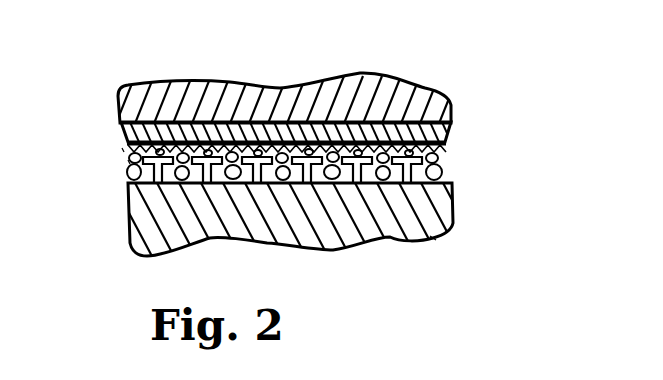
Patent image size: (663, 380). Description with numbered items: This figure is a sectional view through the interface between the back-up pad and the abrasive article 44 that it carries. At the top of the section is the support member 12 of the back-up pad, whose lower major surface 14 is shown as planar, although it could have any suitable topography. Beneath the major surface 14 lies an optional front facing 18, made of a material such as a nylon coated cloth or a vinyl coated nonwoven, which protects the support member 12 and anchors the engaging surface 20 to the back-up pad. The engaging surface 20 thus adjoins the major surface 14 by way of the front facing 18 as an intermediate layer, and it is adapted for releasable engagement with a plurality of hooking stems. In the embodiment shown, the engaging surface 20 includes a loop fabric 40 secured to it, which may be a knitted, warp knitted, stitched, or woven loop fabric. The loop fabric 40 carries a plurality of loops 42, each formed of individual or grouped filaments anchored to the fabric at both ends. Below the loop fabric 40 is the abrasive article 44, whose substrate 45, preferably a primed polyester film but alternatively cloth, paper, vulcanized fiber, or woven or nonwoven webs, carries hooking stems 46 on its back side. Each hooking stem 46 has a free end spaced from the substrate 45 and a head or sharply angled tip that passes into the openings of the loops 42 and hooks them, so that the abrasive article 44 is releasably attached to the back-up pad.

The support member 12 is at (283, 72).
The major surface 14 is at (168, 132).
The front facing 18 is at (447, 131).
The engaging surface 20 is at (447, 160).
The loop fabric 40 is at (108, 150).
The loops 42 is at (131, 162).
The abrasive article 44 is at (258, 258).
The substrate 45 is at (432, 236).
The hooking stems 46 is at (447, 172).